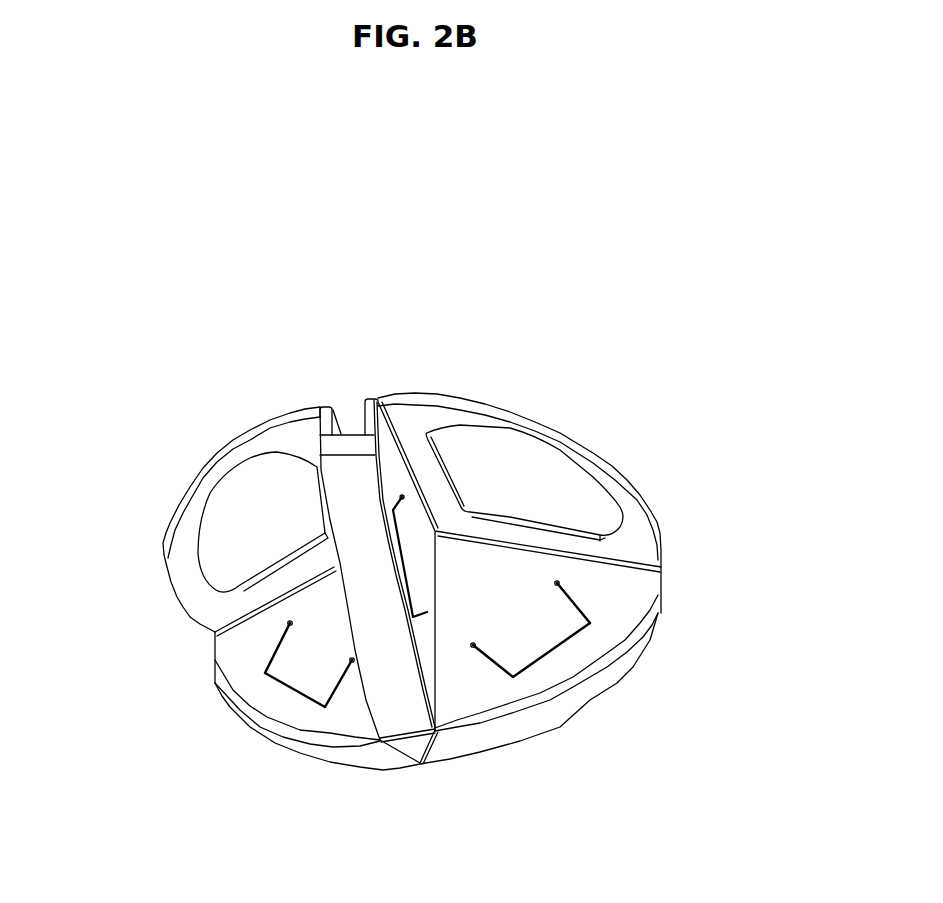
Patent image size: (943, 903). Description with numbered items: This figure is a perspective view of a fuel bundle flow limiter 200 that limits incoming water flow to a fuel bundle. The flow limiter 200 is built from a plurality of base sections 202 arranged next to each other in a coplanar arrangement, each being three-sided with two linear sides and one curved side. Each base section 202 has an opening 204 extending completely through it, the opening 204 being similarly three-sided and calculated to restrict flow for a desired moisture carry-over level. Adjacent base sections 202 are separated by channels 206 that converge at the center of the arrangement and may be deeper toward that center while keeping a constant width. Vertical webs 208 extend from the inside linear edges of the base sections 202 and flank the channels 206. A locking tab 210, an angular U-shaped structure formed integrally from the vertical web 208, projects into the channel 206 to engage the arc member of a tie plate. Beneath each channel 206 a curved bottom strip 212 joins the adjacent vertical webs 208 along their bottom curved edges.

The fuel bundle flow limiter 200 is at (610, 371).
The base section 202 is at (622, 485).
The opening 204 is at (509, 453).
The channel 206 is at (341, 413).
The vertical web 208 is at (622, 598).
The locking tab 210 is at (555, 653).
The bottom strip 212 is at (363, 599).